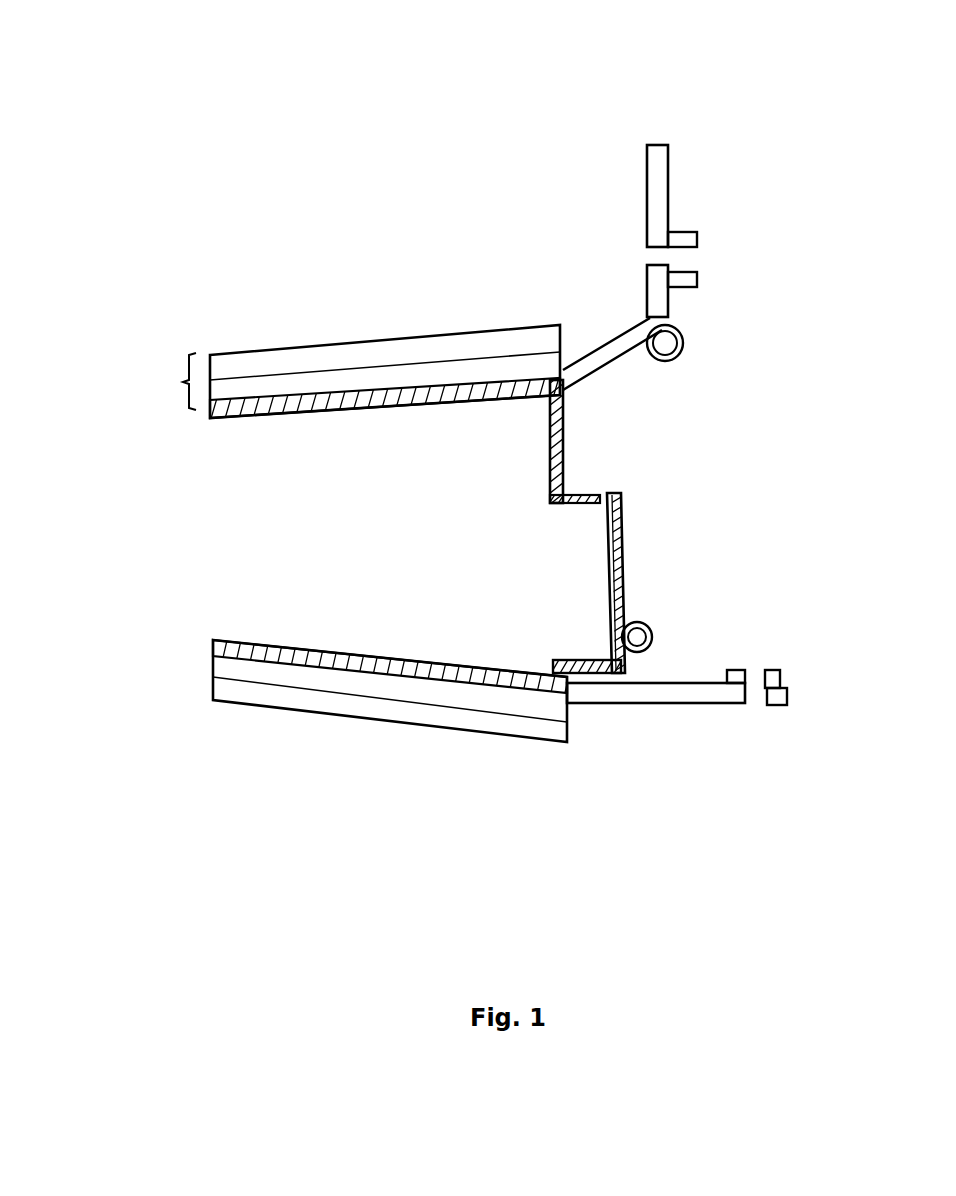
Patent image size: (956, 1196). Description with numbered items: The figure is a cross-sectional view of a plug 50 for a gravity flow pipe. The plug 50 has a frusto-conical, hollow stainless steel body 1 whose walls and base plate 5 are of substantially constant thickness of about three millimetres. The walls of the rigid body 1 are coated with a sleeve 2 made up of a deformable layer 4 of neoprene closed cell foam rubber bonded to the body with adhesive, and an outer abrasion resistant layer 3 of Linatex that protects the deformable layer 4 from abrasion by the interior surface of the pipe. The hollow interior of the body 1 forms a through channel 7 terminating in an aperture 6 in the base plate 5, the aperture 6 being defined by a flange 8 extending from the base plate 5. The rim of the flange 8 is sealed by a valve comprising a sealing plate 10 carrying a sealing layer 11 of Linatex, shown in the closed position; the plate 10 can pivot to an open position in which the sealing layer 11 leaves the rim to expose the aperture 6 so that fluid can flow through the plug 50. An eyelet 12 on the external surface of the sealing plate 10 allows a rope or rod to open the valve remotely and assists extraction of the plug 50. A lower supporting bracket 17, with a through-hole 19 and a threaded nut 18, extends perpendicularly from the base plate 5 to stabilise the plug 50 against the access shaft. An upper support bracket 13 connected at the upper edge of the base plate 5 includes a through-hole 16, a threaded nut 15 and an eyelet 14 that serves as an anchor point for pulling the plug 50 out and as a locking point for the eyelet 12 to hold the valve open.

The plug 50 is at (493, 185).
The body 1 is at (233, 643).
The sleeve 2 is at (182, 378).
The abrasion resistant layer 3 is at (275, 362).
The deformable layer 4 is at (348, 390).
The base plate 5 is at (563, 430).
The aperture 6 is at (600, 490).
The through channel 7 is at (325, 525).
The flange 8 is at (577, 525).
The sealing plate 10 is at (622, 538).
The sealing layer 11 is at (620, 596).
The eyelet 12 is at (655, 636).
The upper support bracket 13 is at (657, 173).
The eyelet 14 is at (690, 337).
The threaded nut 15 is at (690, 235).
The through-hole 16 is at (640, 258).
The lower supporting bracket 17 is at (670, 695).
The threaded nut 18 is at (780, 672).
The through-hole 19 is at (753, 700).